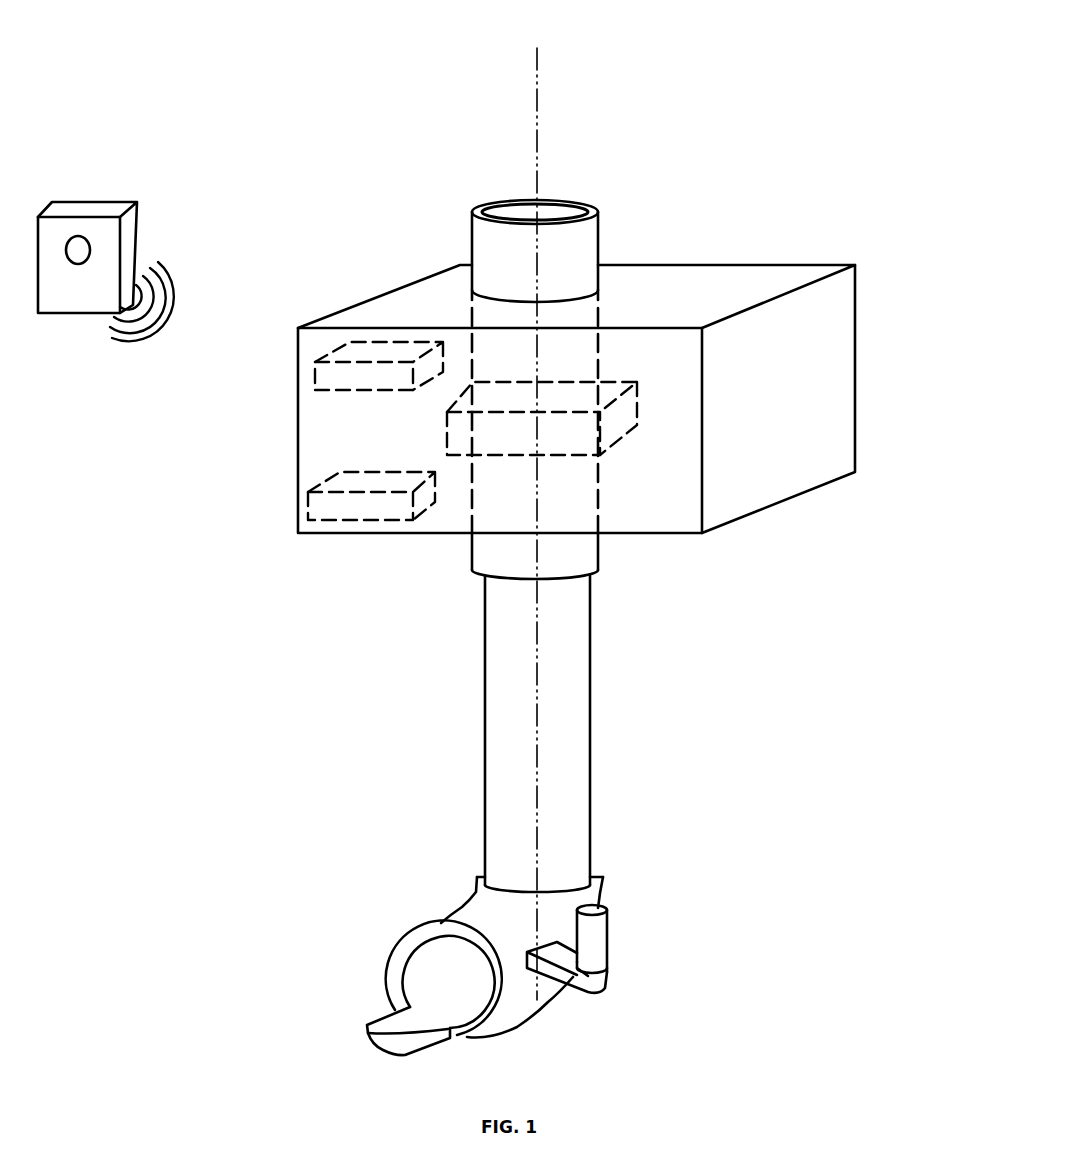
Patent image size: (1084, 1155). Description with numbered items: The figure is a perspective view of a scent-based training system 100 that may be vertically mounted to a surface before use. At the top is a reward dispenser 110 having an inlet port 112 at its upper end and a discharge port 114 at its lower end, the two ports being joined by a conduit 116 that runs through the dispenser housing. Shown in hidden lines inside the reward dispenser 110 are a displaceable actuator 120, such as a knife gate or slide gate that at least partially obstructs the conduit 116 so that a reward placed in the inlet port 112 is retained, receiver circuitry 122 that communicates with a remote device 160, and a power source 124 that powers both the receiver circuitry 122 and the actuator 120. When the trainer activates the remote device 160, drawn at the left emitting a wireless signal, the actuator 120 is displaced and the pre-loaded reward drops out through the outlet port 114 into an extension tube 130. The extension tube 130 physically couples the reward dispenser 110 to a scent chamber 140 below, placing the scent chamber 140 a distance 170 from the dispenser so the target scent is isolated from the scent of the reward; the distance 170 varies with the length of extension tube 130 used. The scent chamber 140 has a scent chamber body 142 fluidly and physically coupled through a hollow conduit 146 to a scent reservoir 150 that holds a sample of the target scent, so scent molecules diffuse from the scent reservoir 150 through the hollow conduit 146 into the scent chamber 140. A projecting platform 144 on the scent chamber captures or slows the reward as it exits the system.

The scent-based training system 100 is at (885, 47).
The reward dispenser 110 is at (818, 266).
The inlet port 112 is at (602, 229).
The discharge port 114 is at (601, 568).
The conduit 116 is at (562, 490).
The actuator 120 is at (542, 418).
The receiver circuitry 122 is at (379, 366).
The power source 124 is at (371, 496).
The extension tube 130 is at (592, 737).
The scent chamber 140 is at (522, 1021).
The scent chamber body 142 is at (543, 1004).
The projecting platform 144 is at (425, 1048).
The hollow conduit 146 is at (608, 980).
The scent reservoir 150 is at (610, 948).
The remote device 160 is at (137, 222).
The distance 170 is at (468, 578).